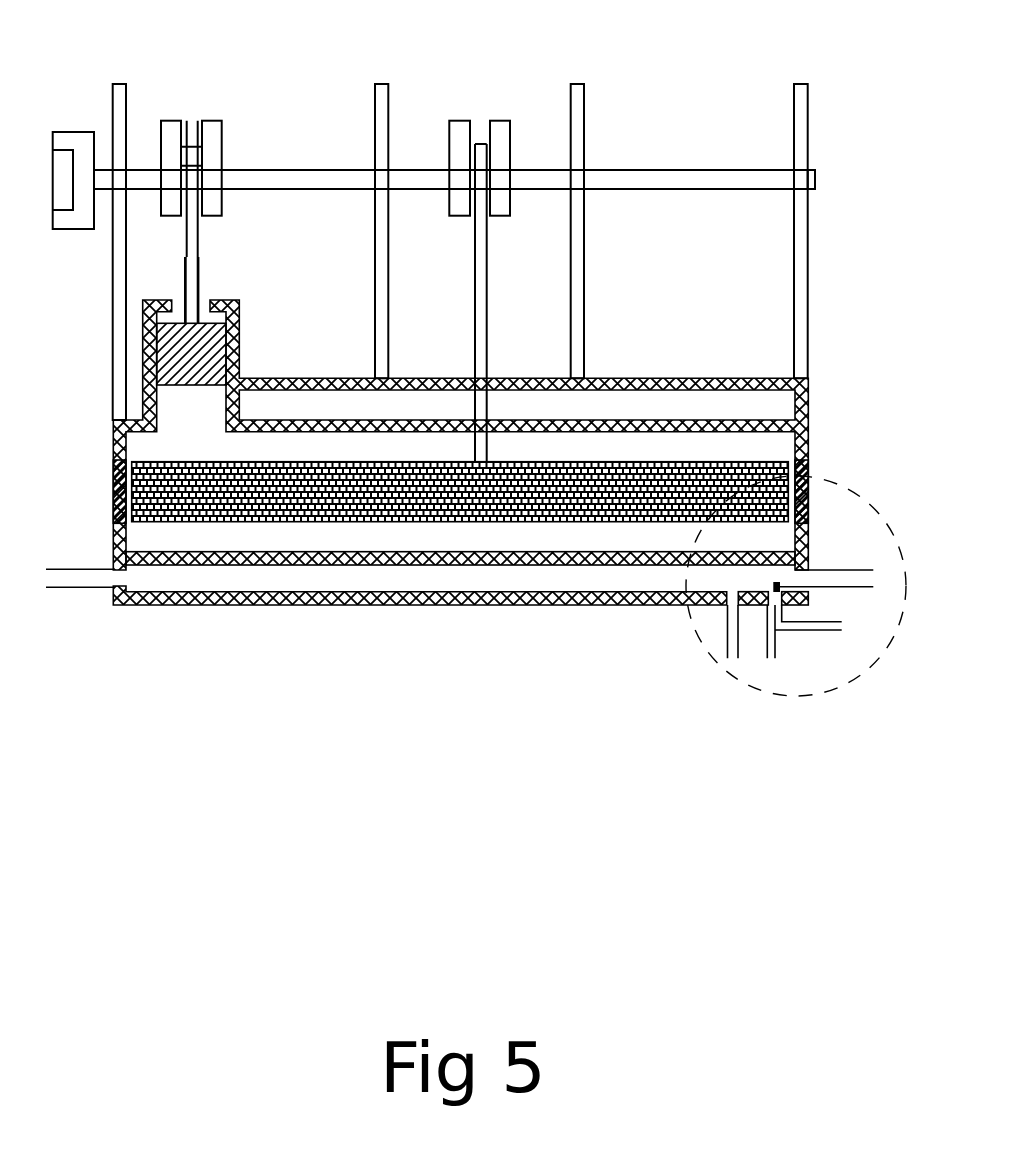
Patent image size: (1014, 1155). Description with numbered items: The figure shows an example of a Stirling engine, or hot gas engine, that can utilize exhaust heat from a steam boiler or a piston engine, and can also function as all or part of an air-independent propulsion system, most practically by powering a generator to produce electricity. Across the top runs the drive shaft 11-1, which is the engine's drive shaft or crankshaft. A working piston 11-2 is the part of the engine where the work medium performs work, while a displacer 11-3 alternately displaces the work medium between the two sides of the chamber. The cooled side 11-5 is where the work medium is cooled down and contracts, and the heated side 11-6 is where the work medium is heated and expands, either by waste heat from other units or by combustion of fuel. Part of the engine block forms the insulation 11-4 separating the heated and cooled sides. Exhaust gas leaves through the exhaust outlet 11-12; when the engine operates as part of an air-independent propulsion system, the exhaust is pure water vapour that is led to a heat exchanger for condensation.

The drive shaft 11-1 is at (434, 259).
The working piston 11-2 is at (410, 435).
The displacer 11-3 is at (680, 590).
The insulation between the heated and cooled side 11-4 is at (415, 491).
The cooled side 11-5 is at (517, 405).
The heated side 11-6 is at (460, 578).
The exhaust outlet 11-12 is at (71, 609).